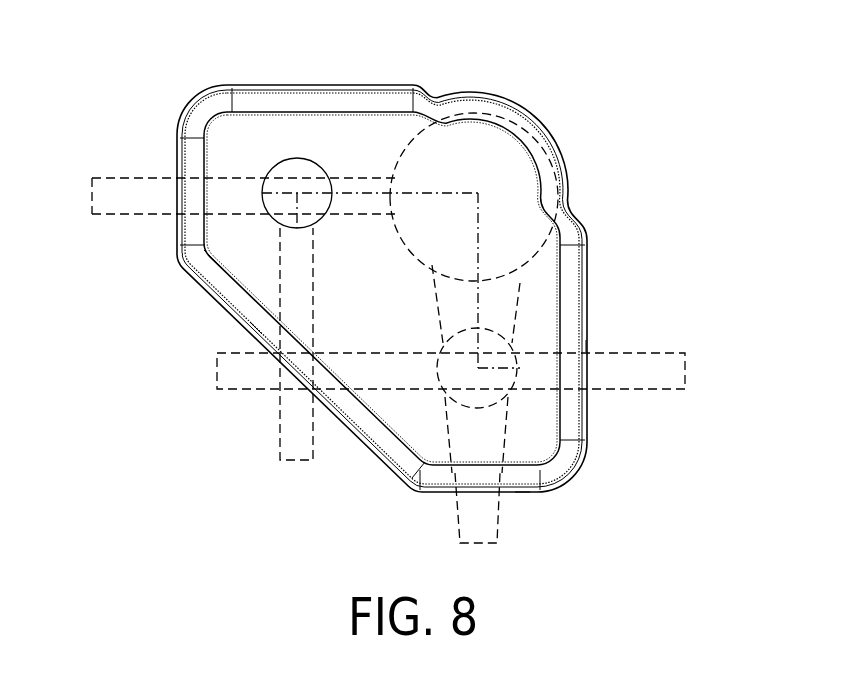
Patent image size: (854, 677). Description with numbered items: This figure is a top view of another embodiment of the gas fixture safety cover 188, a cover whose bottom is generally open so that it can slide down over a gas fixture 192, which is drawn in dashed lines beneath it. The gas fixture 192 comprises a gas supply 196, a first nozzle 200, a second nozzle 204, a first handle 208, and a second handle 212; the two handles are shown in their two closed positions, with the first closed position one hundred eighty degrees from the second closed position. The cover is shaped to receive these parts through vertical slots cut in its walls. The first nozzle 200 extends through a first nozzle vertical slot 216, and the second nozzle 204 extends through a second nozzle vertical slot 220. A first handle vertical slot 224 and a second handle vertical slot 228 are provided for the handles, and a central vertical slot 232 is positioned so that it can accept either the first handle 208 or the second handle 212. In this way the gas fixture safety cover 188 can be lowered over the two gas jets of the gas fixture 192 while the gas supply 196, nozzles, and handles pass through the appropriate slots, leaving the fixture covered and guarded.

The gas fixture safety cover 188 is at (586, 120).
The gas fixture 192 is at (465, 140).
The gas supply 196 is at (517, 182).
The first nozzle 200 is at (112, 201).
The second nozzle 204 is at (480, 530).
The first handle 208 is at (292, 430).
The second handle 212 is at (232, 372).
The first nozzle vertical slot 216 is at (177, 148).
The second nozzle vertical slot 220 is at (522, 493).
The first handle vertical slot 224 is at (297, 90).
The second handle vertical slot 228 is at (586, 345).
The central vertical slot 232 is at (252, 322).